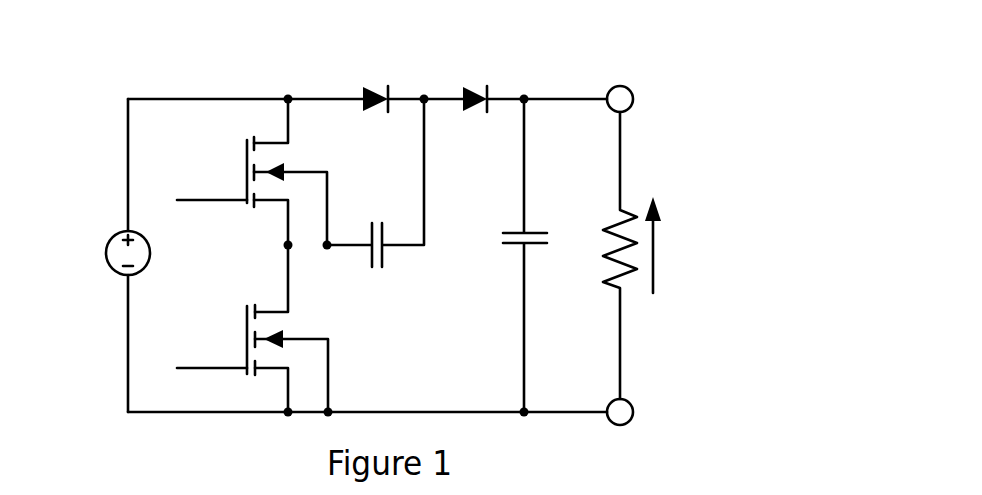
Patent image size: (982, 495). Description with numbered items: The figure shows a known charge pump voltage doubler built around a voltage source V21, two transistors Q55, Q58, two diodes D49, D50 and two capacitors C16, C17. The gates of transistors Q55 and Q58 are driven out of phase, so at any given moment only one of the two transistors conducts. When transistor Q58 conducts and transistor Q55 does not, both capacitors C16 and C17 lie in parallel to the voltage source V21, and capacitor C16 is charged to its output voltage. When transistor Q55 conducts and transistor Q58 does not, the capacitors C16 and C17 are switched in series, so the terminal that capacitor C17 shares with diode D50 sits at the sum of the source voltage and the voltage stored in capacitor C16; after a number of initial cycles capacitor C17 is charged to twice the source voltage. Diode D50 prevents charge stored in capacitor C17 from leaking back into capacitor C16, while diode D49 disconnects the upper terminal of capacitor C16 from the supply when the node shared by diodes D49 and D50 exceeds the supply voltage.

The voltage source V21 is at (106, 253).
The transistor Q55 is at (252, 172).
The transistor Q58 is at (252, 328).
The diode D49 is at (376, 111).
The diode D50 is at (476, 111).
The capacitor C16 is at (377, 192).
The capacitor C17 is at (535, 255).
The load resistor RL is at (602, 255).